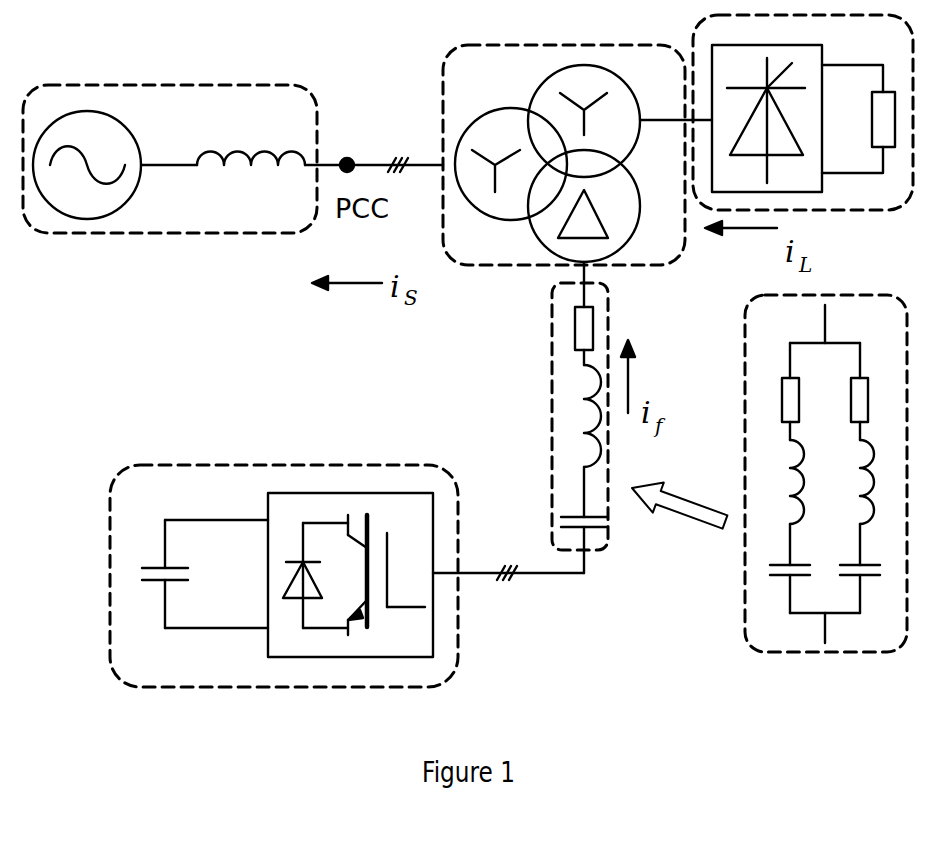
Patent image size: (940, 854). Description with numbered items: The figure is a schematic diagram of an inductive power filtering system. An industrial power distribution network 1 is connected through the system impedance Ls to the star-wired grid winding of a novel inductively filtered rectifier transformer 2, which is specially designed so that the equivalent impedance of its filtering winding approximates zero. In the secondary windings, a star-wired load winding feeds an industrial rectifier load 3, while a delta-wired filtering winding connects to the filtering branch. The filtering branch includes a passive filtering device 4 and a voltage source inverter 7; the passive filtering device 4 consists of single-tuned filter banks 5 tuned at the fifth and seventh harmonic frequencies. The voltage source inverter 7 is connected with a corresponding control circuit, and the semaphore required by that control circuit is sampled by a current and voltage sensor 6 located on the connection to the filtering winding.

The industrial power distribution network 1 is at (233, 159).
The novel inductively filtered rectifier transformer 2 is at (577, 176).
The industrial rectifier load 3 is at (803, 112).
The passive filtering device 4 is at (563, 428).
The single-tuned filter bank 5 is at (826, 473).
The current and voltage sensor 6 is at (533, 598).
The voltage source inverter 7 is at (284, 576).